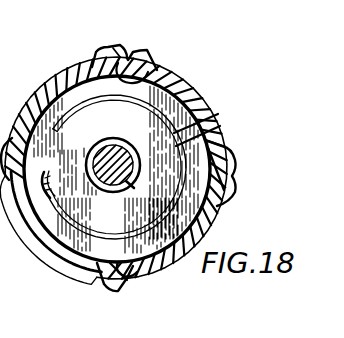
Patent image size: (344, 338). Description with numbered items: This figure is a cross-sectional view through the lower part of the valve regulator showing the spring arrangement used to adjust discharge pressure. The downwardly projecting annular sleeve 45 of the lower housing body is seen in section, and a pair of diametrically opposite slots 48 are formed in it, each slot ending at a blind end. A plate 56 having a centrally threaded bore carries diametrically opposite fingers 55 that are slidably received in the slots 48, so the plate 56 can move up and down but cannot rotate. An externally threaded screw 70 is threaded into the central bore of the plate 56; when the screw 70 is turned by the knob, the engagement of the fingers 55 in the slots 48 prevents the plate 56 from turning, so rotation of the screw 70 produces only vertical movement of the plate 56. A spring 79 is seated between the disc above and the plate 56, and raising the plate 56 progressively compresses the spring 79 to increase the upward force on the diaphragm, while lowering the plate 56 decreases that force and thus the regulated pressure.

The downwardly projecting annular sleeve 45 is at (52, 250).
The slots 48 is at (123, 62).
The fingers 55 is at (165, 60).
The plate 56 is at (200, 125).
The externally threaded screw 70 is at (128, 185).
The spring 79 is at (77, 107).